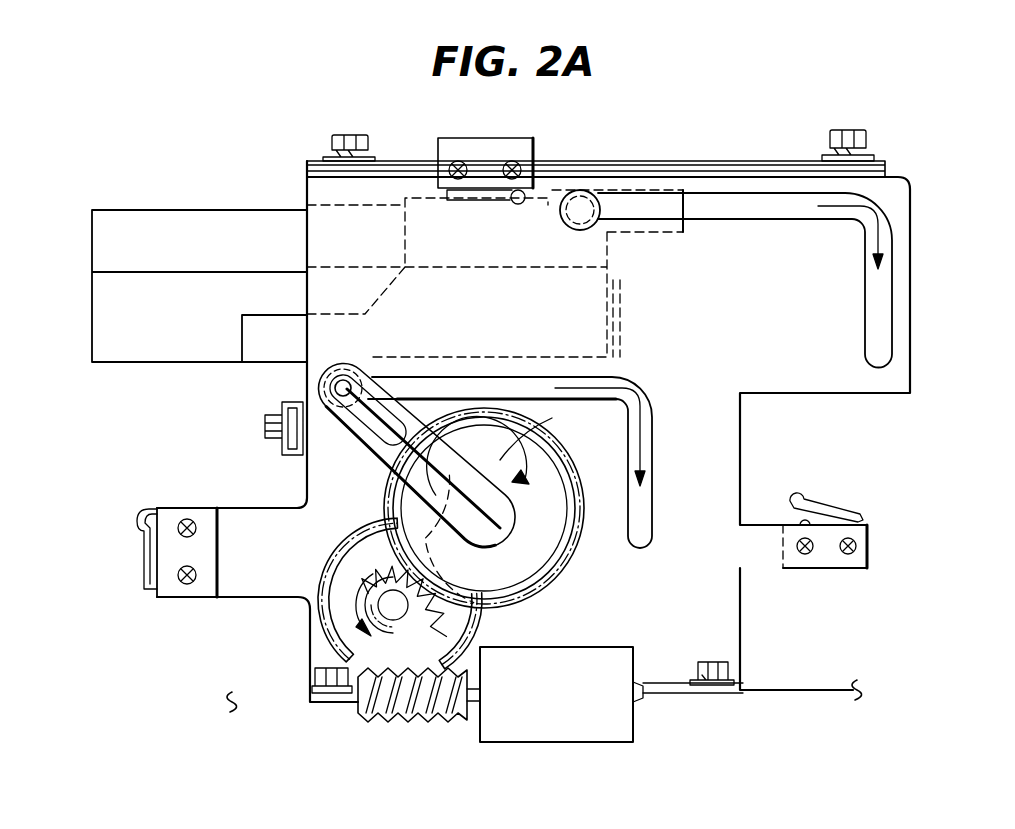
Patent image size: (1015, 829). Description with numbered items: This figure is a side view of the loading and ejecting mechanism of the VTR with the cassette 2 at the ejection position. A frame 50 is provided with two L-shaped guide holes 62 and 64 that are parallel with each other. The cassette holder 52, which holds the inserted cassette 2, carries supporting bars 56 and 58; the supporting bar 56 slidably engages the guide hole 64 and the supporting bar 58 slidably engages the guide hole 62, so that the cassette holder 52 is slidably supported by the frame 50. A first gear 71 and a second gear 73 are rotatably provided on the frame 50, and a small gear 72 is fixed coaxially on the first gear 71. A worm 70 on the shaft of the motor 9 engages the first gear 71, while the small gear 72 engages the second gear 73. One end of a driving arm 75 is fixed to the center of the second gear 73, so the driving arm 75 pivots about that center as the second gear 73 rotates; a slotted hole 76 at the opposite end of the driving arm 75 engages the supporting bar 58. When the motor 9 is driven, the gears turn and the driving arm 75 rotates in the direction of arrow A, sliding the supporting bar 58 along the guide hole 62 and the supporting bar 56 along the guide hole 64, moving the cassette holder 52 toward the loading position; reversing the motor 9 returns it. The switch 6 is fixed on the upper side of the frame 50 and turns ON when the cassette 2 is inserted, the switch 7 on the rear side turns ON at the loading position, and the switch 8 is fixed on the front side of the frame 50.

The cassette 2 is at (173, 215).
The switch 6 is at (497, 145).
The switch 7 is at (862, 552).
The switch 8 is at (195, 596).
The motor 9 is at (577, 727).
The frame 50 is at (725, 443).
The cassette holder 52 is at (265, 355).
The supporting bar 56 is at (590, 210).
The supporting bar 58 is at (307, 385).
The L-shaped guide hole 62 is at (655, 535).
The L-shaped guide hole 64 is at (883, 223).
The worm 70 is at (413, 720).
The first gear 71 is at (320, 620).
The small gear 72 is at (410, 608).
The second gear 73 is at (555, 563).
The driving arm 75 is at (392, 455).
The slotted hole 76 is at (385, 432).